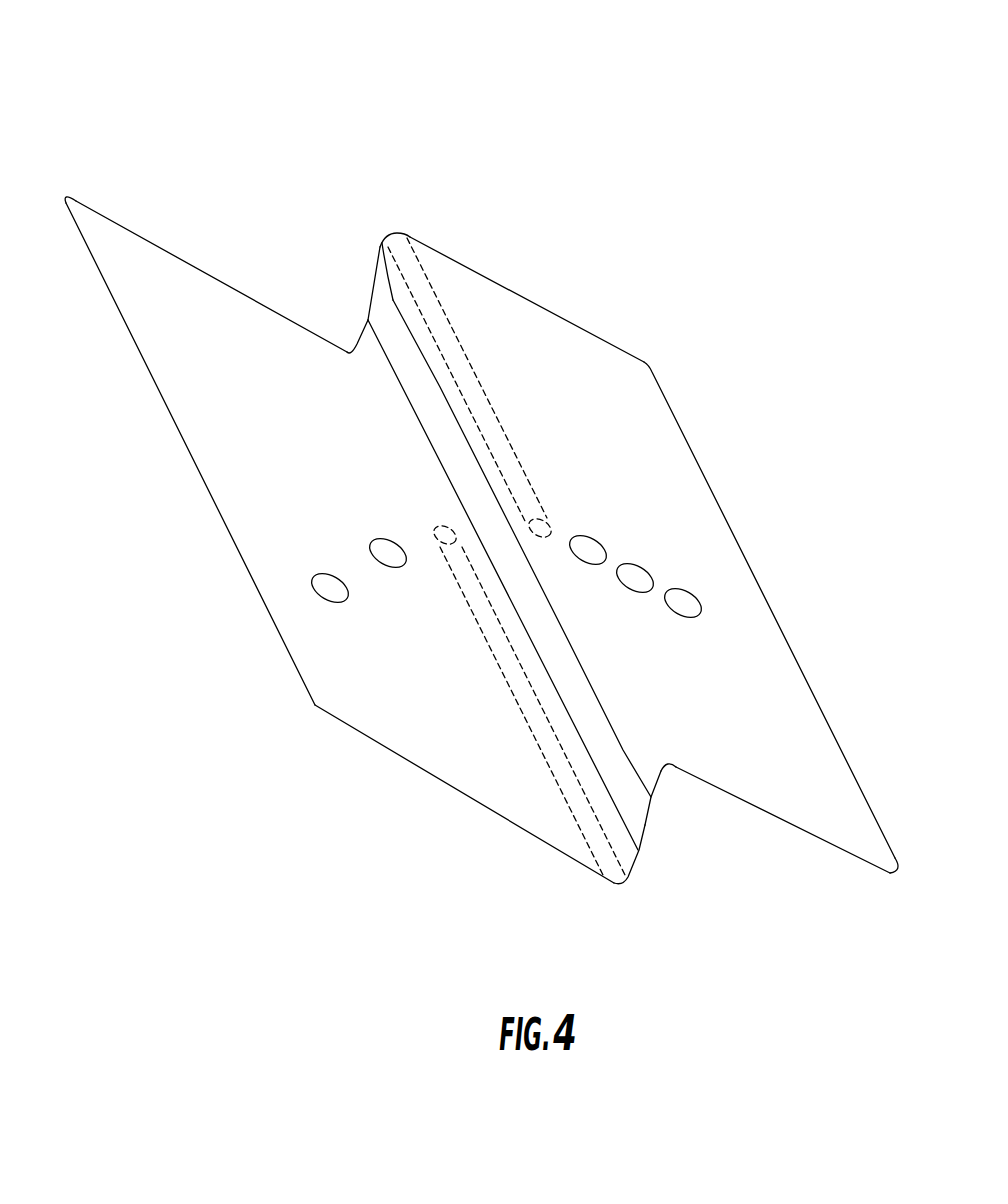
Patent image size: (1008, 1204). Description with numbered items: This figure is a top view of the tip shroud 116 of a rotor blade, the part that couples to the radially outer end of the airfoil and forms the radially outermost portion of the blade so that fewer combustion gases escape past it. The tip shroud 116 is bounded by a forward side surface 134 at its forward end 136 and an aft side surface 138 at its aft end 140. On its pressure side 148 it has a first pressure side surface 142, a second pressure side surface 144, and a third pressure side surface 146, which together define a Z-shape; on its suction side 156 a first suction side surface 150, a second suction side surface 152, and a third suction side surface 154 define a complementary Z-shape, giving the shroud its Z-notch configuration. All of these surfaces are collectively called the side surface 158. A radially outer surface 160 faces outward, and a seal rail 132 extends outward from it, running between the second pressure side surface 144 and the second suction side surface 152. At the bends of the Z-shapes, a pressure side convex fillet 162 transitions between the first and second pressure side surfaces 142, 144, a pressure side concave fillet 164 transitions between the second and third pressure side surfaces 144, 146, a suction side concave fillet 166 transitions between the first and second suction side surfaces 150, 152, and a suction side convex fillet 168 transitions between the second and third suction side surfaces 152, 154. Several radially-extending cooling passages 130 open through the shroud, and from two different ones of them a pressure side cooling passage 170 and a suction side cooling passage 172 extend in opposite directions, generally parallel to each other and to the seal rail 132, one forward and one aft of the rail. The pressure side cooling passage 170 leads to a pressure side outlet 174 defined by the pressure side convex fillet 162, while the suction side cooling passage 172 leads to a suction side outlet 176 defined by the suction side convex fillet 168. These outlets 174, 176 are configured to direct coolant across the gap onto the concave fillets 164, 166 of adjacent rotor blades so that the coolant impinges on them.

The tip shroud 116 is at (75, 120).
The radially-extending cooling passages 130 is at (430, 521).
The seal rail 132 is at (415, 383).
The forward side surface 134 is at (215, 505).
The forward end 136 is at (135, 582).
The aft side surface 138 is at (790, 650).
The aft end 140 is at (792, 408).
The first pressure side surface 142 is at (485, 808).
The second pressure side surface 144 is at (650, 828).
The third pressure side surface 146 is at (829, 845).
The pressure side 148 is at (360, 800).
The first suction side surface 150 is at (178, 257).
The second suction side surface 152 is at (382, 243).
The third suction side surface 154 is at (535, 302).
The suction side 156 is at (522, 195).
The side surface 158 is at (82, 236).
The radially outer surface 160 is at (209, 361).
The pressure side convex fillet 162 is at (628, 888).
The pressure side concave fillet 164 is at (670, 767).
The suction side concave fillet 166 is at (350, 350).
The suction side convex fillet 168 is at (382, 263).
The pressure side cooling passage 170 is at (492, 672).
The suction side cooling passage 172 is at (505, 424).
The pressure side outlet 174 is at (620, 886).
The suction side outlet 176 is at (392, 230).